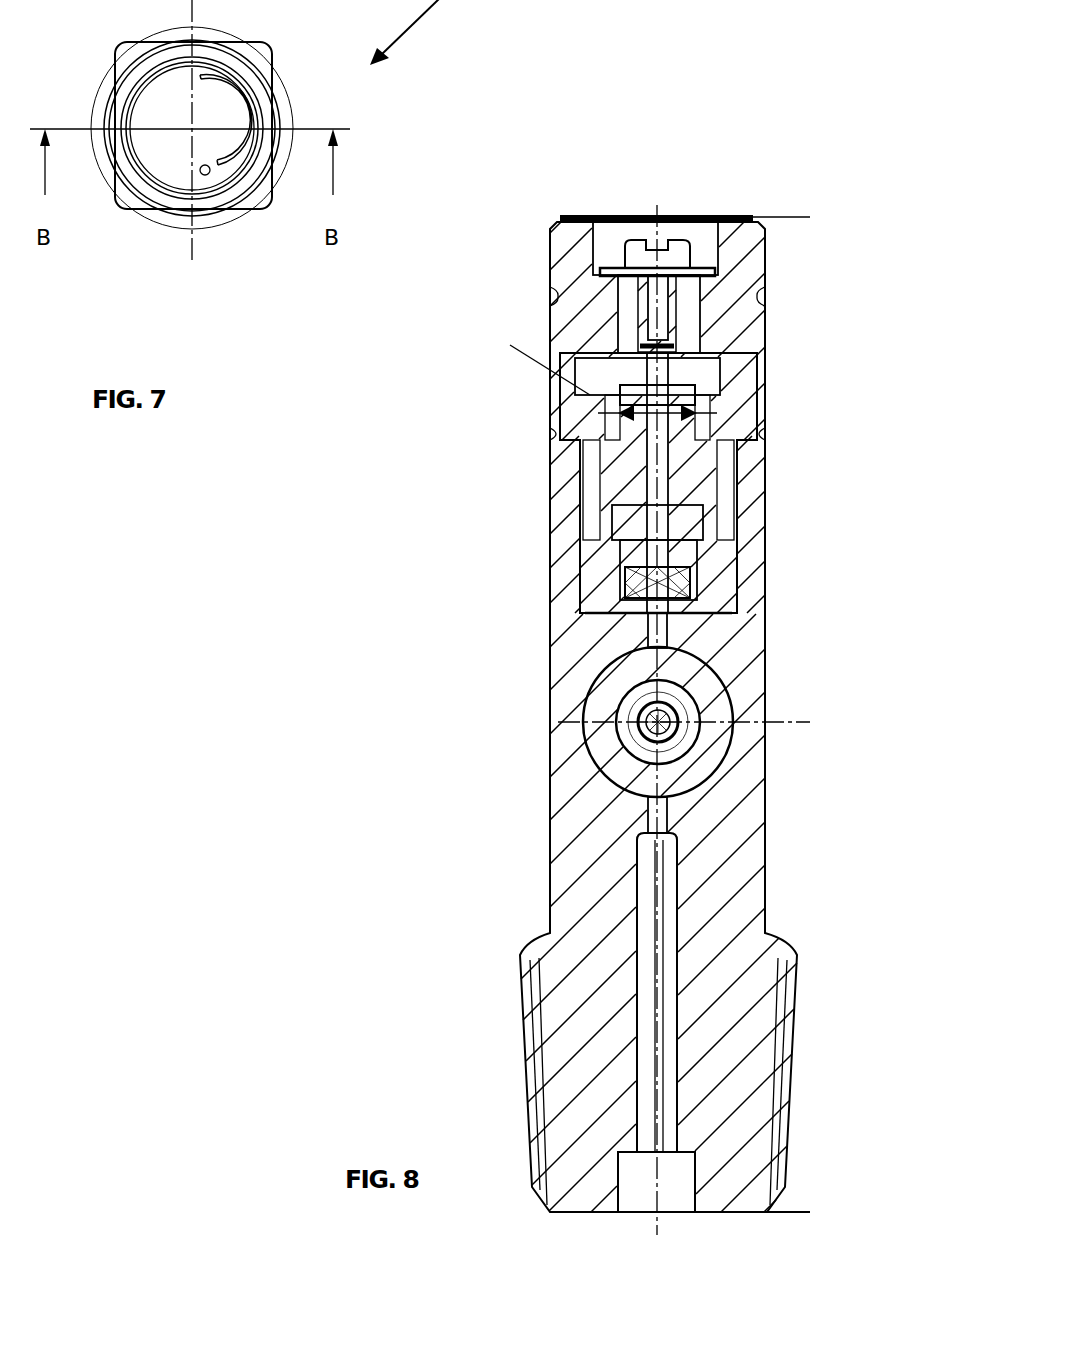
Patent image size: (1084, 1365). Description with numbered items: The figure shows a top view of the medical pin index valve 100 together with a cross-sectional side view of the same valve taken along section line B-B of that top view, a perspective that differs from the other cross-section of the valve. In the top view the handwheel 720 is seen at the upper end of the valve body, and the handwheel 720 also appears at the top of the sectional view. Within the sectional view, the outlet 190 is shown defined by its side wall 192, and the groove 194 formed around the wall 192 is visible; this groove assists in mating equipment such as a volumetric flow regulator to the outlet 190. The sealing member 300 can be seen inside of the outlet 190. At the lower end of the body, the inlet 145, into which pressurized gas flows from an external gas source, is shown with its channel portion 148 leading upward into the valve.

In FIG. 8, the medical pin index valve 100 is at (838, 186).
In FIG. 7, the handwheel 720 is at (170, 100).
In FIG. 8, the handwheel 720 is at (593, 300).
In FIG. 8, the groove 194 is at (600, 706).
In FIG. 8, the side wall 192 is at (697, 700).
In FIG. 8, the sealing member 300 is at (638, 745).
In FIG. 8, the outlet passageway 190 is at (708, 742).
In FIG. 8, the channel portion 148 is at (652, 1027).
In FIG. 8, the inlet passageway 145 is at (642, 1180).